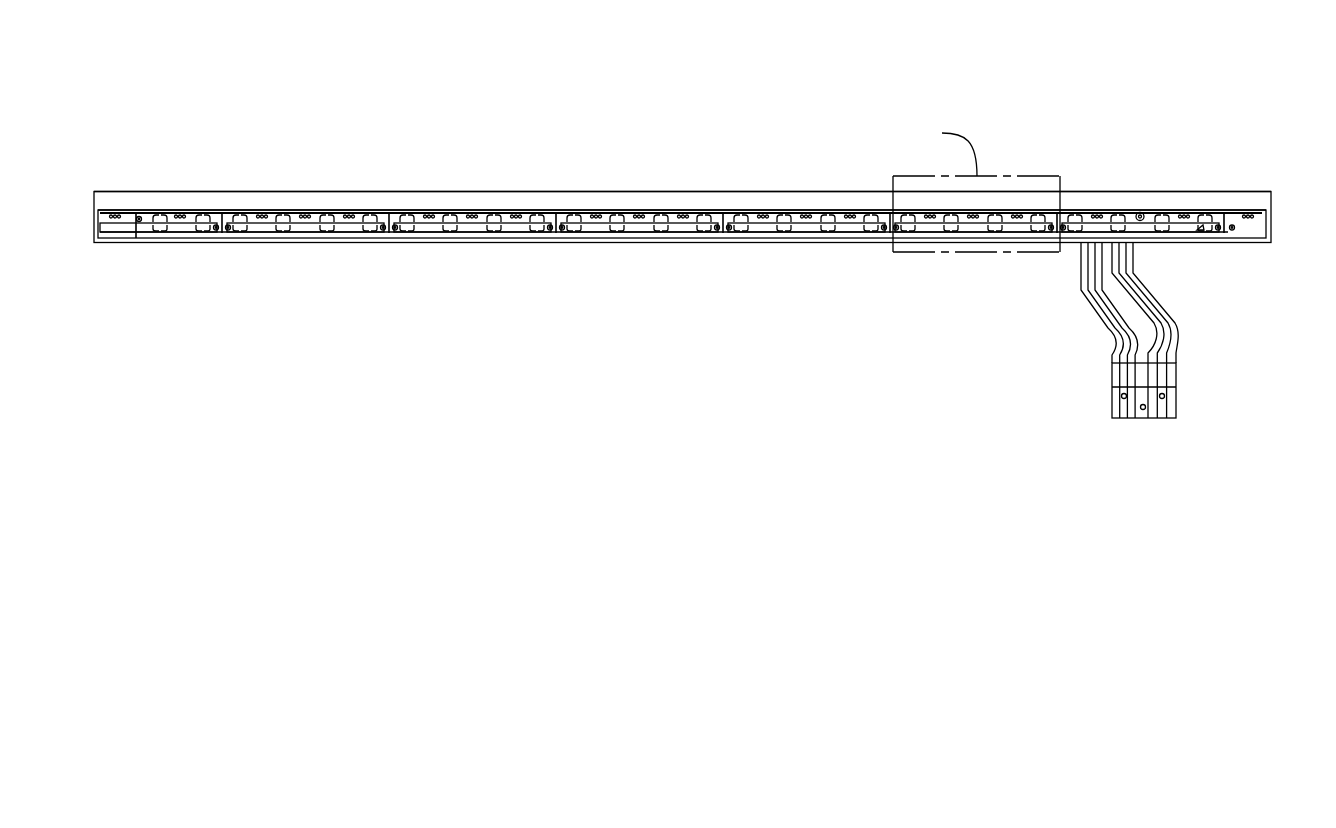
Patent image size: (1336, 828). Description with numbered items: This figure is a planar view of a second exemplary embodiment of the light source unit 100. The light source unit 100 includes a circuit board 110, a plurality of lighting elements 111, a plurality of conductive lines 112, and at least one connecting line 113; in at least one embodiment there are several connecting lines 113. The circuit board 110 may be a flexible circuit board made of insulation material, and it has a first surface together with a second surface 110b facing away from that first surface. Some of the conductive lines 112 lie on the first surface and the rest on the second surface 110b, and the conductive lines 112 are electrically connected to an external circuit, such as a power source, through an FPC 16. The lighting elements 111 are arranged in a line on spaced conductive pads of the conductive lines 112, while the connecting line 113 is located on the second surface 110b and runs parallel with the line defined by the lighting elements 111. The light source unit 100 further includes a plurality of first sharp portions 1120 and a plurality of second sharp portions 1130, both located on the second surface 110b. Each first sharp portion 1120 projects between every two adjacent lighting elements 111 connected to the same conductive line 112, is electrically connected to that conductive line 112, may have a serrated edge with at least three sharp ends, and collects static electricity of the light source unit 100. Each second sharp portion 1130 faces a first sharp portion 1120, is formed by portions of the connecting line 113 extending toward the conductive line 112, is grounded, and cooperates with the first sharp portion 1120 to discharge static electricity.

The light source unit 100 is at (637, 68).
The circuit board 110 is at (1268, 217).
The second surface 110b is at (528, 191).
The lighting elements 111 is at (1197, 239).
The conductive lines 112 is at (1152, 234).
The connecting line 113 is at (1231, 213).
The first sharp portions 1120 is at (1094, 216).
The second sharp portions 1130 is at (1184, 215).
The FPC 16 is at (1115, 383).